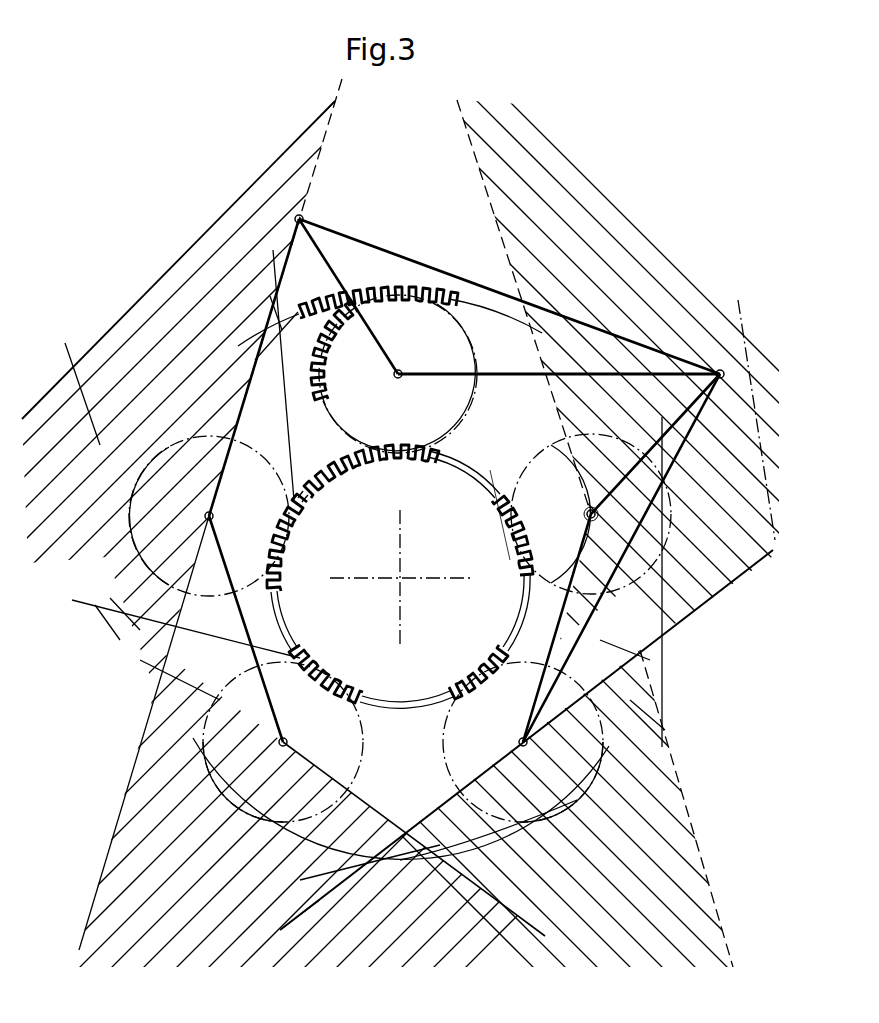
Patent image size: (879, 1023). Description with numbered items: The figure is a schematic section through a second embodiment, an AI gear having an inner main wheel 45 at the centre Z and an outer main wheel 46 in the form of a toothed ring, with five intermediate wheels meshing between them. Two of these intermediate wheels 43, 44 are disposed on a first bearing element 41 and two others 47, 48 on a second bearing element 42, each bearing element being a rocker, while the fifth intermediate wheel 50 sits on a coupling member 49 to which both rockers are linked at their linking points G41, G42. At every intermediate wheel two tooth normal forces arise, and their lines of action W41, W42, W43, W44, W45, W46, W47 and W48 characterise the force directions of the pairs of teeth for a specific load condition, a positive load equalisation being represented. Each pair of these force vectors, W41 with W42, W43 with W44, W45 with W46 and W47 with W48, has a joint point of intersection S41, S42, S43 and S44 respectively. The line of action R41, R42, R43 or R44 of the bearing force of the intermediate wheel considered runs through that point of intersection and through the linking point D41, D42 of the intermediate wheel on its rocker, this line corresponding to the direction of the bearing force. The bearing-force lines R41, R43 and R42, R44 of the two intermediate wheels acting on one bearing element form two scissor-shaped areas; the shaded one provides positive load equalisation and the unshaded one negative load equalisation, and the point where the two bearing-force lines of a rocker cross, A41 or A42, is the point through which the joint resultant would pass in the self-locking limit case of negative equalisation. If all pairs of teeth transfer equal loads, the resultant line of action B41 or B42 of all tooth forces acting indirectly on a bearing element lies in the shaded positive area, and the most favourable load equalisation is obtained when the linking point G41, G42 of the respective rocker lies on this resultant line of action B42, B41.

The bearing element 41 is at (677, 456).
The bearing element 42 is at (291, 468).
The intermediate wheel 43 is at (615, 558).
The intermediate wheel 44 is at (523, 742).
The inner main wheel 45 is at (400, 576).
The outer main wheel 46 is at (390, 301).
The intermediate wheel 47 is at (209, 589).
The intermediate wheel 48 is at (283, 742).
The coupling member 49 is at (383, 249).
The intermediate wheel 50 is at (394, 374).
The center axis Z is at (405, 582).
The linking point G41 is at (716, 366).
The linking point G42 is at (303, 216).
The intermediate wheel rotational axis D41 is at (586, 511).
The intermediate wheel rotational axis D42 is at (518, 744).
The line of action R41 is at (489, 197).
The line of action R42 is at (322, 156).
The line of action R43 is at (320, 913).
The line of action R44 is at (414, 827).
The resultant line of action B41 is at (553, 942).
The resultant line of action B42 is at (70, 370).
The point of intersection A41 is at (645, 652).
The point of intersection A42 is at (140, 660).
The point of intersection S41 is at (659, 717).
The point of intersection S42 is at (343, 877).
The point of intersection S43 is at (110, 612).
The point of intersection S44 is at (270, 292).
The tooth force W41 is at (498, 515).
The tooth force W42 is at (662, 693).
The tooth force W43 is at (440, 748).
The tooth force W44 is at (547, 817).
The tooth force W45 is at (350, 692).
The tooth force W46 is at (123, 620).
The tooth force W47 is at (298, 312).
The tooth force W48 is at (272, 262).